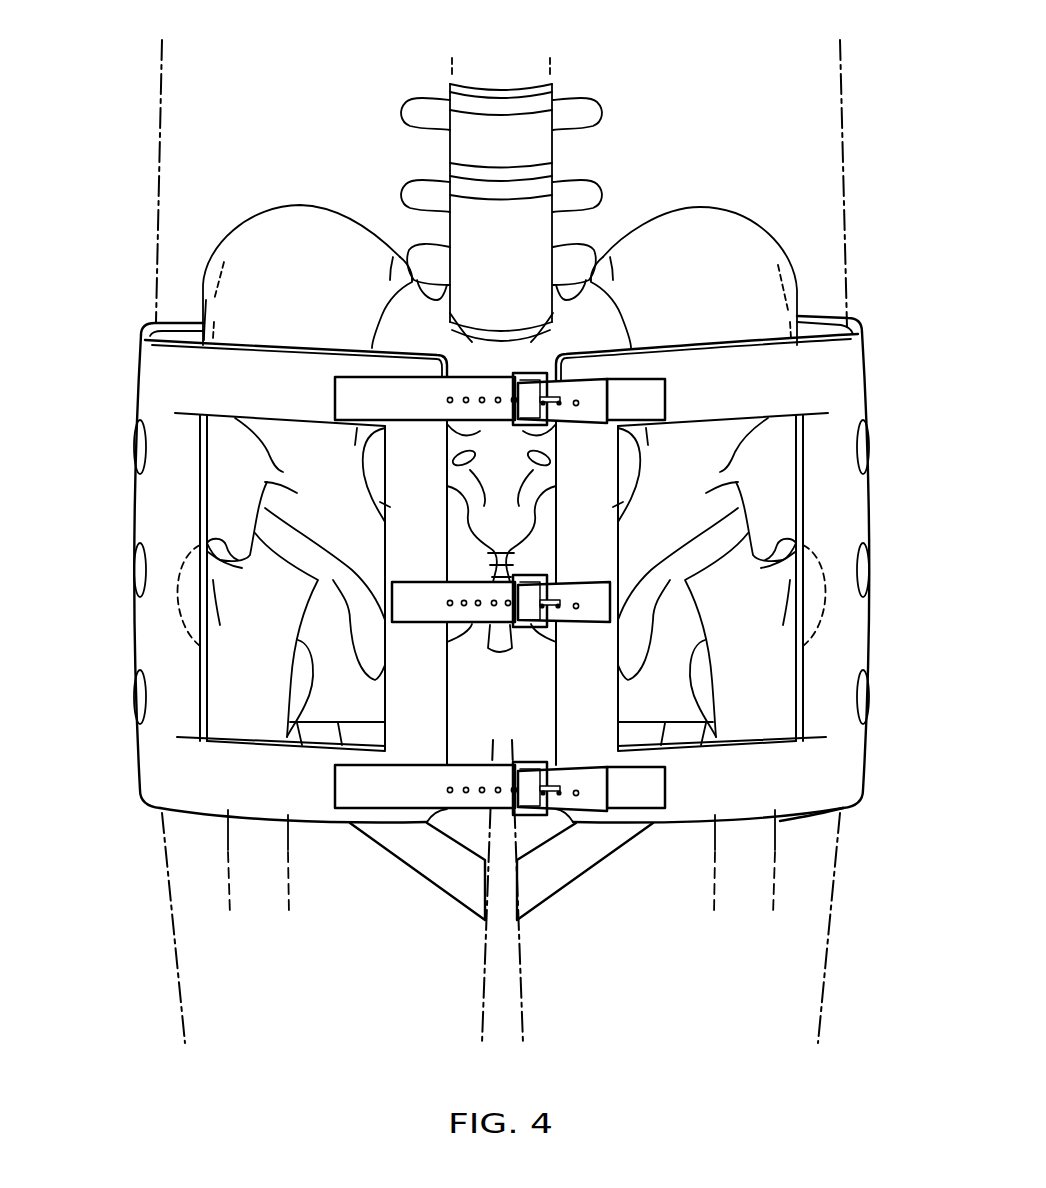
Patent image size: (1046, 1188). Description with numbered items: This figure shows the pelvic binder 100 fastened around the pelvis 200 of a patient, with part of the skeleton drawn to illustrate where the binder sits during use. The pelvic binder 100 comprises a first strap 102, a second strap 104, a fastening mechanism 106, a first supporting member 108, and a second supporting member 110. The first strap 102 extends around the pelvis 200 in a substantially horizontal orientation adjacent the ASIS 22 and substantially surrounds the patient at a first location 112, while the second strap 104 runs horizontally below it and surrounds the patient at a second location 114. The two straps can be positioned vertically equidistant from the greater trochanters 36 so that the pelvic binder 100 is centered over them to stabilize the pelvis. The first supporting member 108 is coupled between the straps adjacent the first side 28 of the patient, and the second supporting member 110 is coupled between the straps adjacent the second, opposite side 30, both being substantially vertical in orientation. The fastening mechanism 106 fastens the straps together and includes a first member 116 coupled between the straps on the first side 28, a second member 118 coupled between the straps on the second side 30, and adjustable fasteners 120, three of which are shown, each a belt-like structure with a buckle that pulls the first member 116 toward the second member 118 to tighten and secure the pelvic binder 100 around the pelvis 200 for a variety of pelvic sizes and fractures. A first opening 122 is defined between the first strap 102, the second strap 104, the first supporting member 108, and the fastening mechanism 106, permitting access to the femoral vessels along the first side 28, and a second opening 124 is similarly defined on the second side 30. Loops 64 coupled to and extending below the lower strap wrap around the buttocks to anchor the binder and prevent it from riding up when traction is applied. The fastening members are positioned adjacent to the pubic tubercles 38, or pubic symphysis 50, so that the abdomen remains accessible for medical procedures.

The ASIS 22 is at (214, 312).
The first side 28 is at (126, 830).
The second side 30 is at (858, 830).
The greater trochanters 36 is at (838, 556).
The pubic tubercles 38 is at (485, 600).
The pubic symphysis 50 is at (502, 658).
The loops 64 is at (466, 883).
The pelvic binder 100 is at (888, 318).
The first strap 102 is at (268, 360).
The second strap 104 is at (208, 802).
The fastening mechanism 106 is at (542, 830).
The first supporting member 108 is at (150, 638).
The second supporting member 110 is at (854, 640).
The first location 112 is at (860, 310).
The second location 114 is at (882, 822).
The first member 116 is at (397, 685).
The second member 118 is at (606, 685).
The adjustable fastener 120 is at (487, 382).
The first opening 122 is at (228, 658).
The second opening 124 is at (776, 520).
The pelvis 200 is at (702, 220).